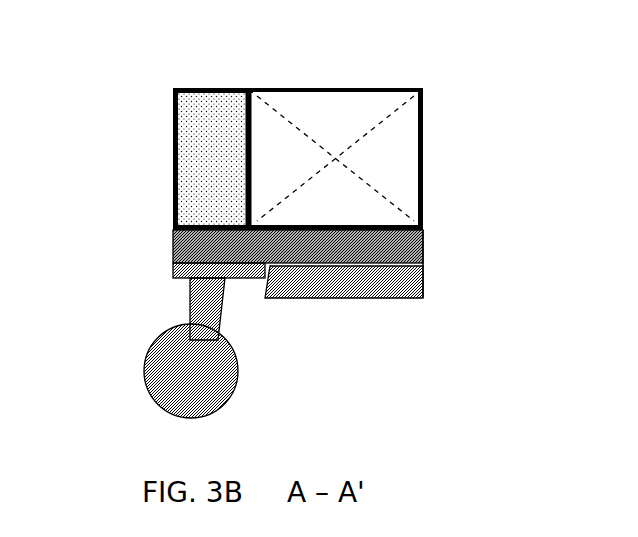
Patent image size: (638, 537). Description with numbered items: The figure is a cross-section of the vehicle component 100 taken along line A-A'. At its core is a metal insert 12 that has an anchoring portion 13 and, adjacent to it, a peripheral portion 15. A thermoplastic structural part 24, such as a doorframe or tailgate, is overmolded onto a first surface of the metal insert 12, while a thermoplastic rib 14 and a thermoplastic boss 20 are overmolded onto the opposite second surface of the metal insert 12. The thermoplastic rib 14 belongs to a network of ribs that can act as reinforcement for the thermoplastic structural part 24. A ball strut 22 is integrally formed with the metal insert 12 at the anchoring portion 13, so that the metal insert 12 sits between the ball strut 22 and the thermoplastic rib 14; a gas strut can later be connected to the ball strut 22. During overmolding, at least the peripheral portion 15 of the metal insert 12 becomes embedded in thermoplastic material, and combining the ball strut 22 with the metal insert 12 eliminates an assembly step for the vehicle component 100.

The vehicle component 100 is at (414, 72).
The thermoplastic boss 20 is at (203, 108).
The thermoplastic rib 14 is at (400, 165).
The metal insert 12 is at (425, 243).
The anchoring portion 13 is at (172, 248).
The peripheral portion 15 is at (425, 250).
The thermoplastic structural part 24 is at (388, 298).
The ball strut 22 is at (145, 368).